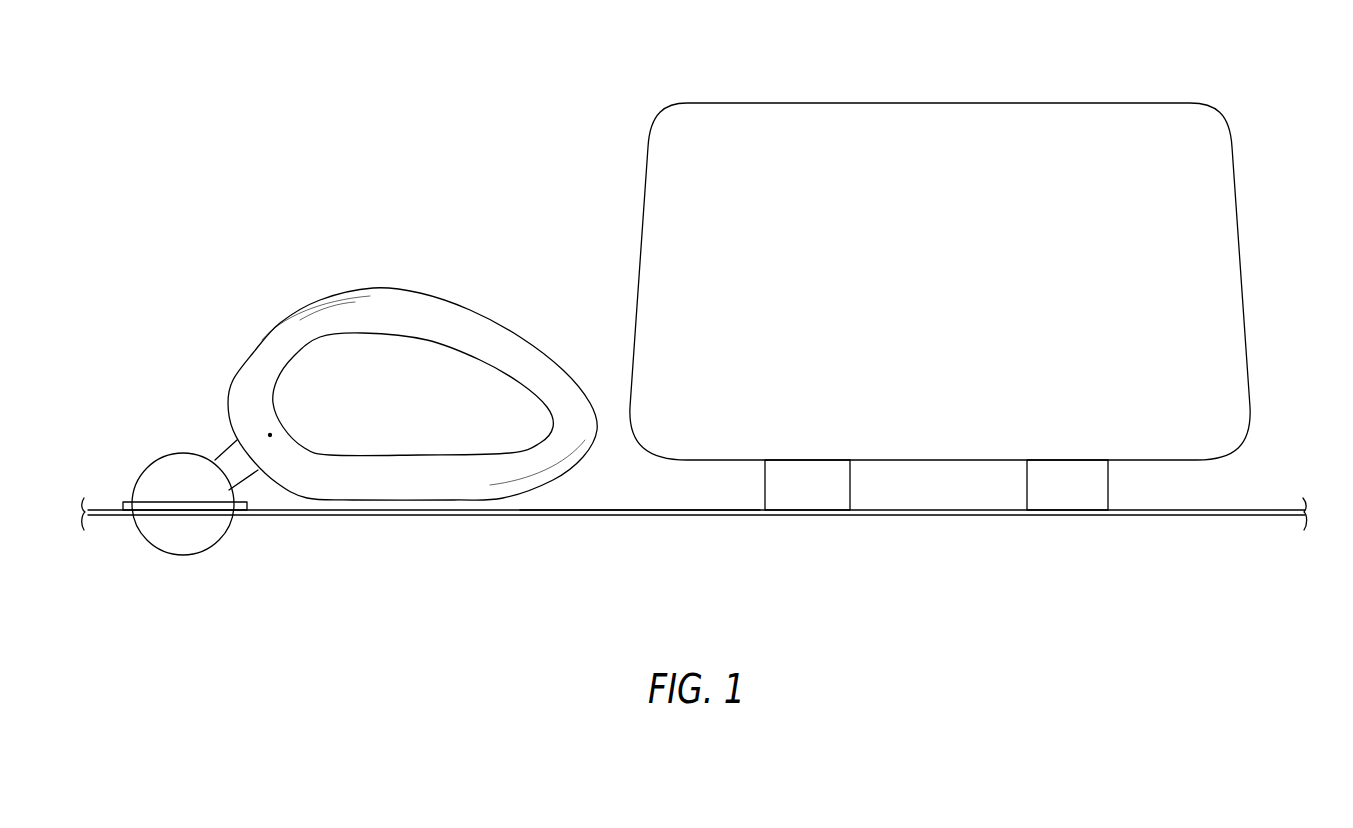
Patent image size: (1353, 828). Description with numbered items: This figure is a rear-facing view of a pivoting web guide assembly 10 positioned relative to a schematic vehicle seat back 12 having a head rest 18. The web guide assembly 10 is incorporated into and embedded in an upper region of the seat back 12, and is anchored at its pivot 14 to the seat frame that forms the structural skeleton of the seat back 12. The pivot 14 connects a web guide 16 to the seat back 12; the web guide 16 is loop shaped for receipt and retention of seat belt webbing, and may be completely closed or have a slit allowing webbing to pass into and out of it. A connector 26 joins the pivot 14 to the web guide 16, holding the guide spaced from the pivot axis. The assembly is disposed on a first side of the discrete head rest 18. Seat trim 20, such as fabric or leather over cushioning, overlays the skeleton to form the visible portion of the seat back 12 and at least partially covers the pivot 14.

The pivoting web guide assembly 10 is at (173, 261).
The seat back 12 is at (1244, 500).
The pivot 14 is at (148, 468).
The web guide 16 is at (403, 292).
The head rest 18 is at (922, 102).
The seat trim 20 is at (582, 510).
The connector 26 is at (225, 448).